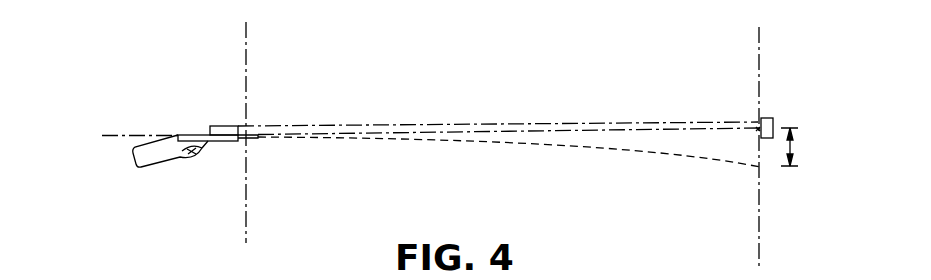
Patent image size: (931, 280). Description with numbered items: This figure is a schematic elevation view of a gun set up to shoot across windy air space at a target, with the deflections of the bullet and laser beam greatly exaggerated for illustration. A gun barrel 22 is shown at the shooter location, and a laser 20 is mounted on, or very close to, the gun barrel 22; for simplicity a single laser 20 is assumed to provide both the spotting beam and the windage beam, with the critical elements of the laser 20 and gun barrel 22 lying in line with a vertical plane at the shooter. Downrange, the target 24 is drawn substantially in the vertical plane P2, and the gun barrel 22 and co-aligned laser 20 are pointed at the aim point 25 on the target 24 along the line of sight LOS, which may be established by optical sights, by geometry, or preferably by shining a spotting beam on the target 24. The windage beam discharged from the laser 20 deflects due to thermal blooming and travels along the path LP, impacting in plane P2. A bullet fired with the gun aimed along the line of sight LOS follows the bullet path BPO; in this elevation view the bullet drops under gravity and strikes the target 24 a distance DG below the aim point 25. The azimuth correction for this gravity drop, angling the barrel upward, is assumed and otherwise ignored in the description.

The laser 20 is at (222, 125).
The gun barrel 22 is at (222, 145).
The target 24 is at (768, 117).
The aim point 25 is at (758, 130).
The path LP is at (688, 121).
The line of sight LOS is at (655, 130).
The bullet path BPO is at (517, 143).
The gravity drop distance DG is at (806, 147).
The vertical plane P2 is at (760, 235).